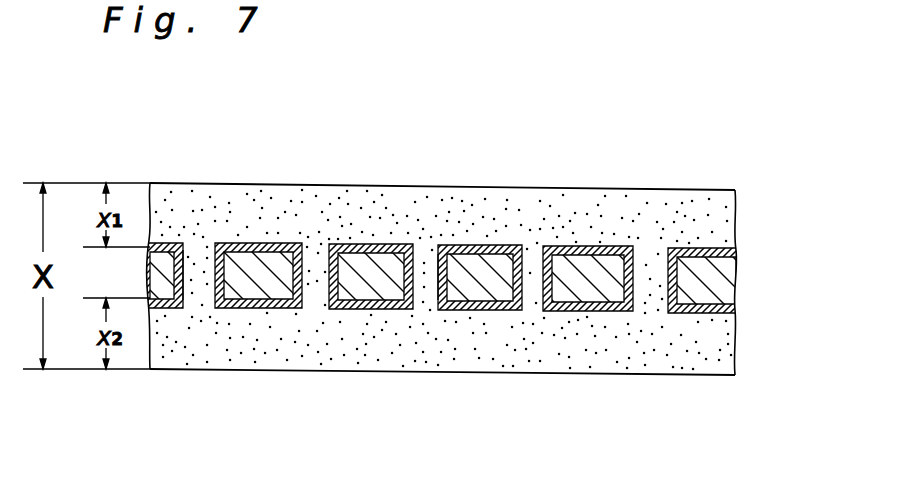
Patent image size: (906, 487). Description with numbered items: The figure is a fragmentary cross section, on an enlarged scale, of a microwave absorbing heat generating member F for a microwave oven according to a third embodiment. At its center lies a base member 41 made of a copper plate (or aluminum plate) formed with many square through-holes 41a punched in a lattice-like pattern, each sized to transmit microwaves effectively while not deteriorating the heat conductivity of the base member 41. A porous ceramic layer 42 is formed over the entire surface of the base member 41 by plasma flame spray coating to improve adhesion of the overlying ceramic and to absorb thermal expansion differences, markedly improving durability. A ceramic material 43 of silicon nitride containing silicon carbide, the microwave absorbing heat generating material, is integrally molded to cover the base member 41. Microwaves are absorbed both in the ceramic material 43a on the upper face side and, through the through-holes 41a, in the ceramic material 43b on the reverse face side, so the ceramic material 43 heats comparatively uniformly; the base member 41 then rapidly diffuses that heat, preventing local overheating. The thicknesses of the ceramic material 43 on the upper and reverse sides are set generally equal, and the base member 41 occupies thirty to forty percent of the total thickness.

The microwave absorbing heat generating member F is at (665, 145).
The base member 41 is at (478, 272).
The through-holes 41a is at (195, 243).
The porous ceramic layer 42 is at (263, 243).
The ceramic material 43 is at (688, 220).
The ceramic material at the upper face side 43a is at (355, 210).
The ceramic material at the reverse face side 43b is at (362, 338).